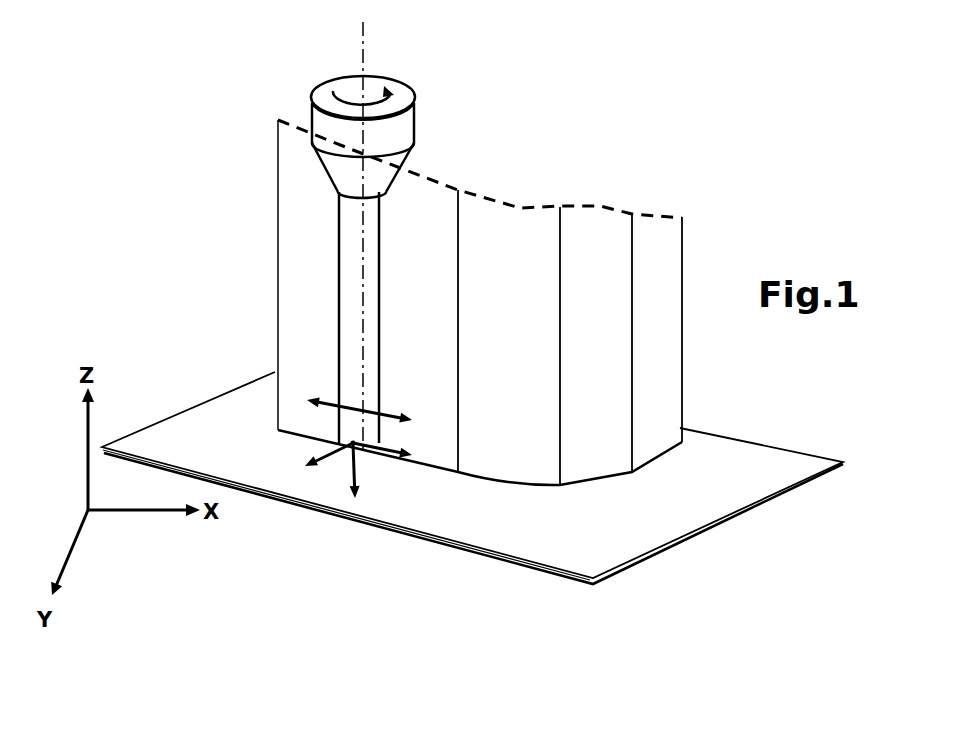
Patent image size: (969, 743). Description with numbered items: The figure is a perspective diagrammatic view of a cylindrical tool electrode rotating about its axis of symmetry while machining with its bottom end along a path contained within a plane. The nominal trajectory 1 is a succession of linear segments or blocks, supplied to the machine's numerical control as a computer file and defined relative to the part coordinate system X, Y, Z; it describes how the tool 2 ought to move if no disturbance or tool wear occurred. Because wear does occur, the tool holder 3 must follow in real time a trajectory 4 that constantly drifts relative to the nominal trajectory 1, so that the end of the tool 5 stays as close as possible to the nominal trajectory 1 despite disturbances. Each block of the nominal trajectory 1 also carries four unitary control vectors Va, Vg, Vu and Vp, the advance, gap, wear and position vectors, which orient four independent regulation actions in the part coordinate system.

The nominal trajectory 1 is at (517, 478).
The tool 2 is at (353, 297).
The tool holder 3 is at (325, 130).
The trajectory 4 is at (520, 207).
The end of the tool 5 is at (363, 452).